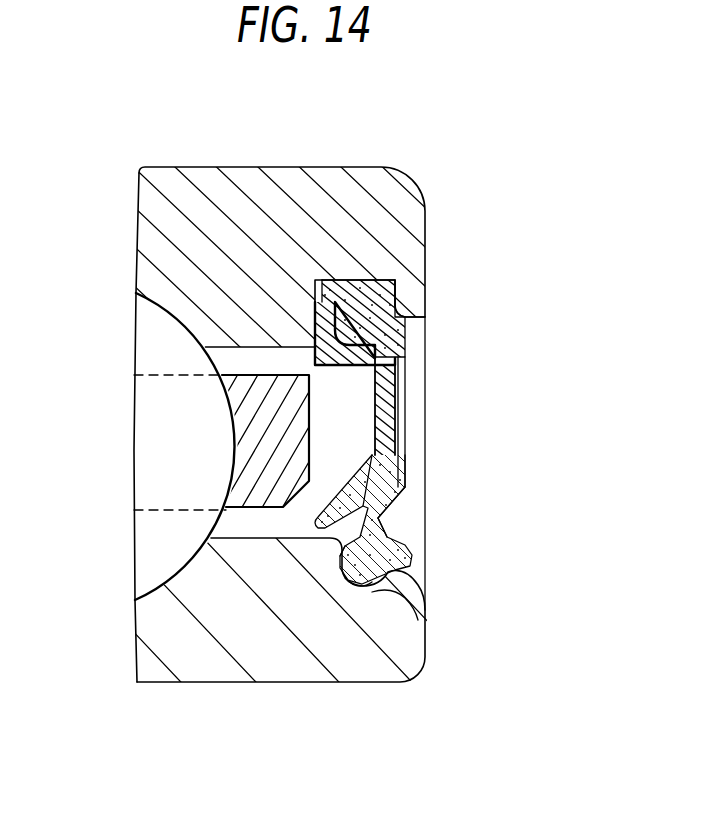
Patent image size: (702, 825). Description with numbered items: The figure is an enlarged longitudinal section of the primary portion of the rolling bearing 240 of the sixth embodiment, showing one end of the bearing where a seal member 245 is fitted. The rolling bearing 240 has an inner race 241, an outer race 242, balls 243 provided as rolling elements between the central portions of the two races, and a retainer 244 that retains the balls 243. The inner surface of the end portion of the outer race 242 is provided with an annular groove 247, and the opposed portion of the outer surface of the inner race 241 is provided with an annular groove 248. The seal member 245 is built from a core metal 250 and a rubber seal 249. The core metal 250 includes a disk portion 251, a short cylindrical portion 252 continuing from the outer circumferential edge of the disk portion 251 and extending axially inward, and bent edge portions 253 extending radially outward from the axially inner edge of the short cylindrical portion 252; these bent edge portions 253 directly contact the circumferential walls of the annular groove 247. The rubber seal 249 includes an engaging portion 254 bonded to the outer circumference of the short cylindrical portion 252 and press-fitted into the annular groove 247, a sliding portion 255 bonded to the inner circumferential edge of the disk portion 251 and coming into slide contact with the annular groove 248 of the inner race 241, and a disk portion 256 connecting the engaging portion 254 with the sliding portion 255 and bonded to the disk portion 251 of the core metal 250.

The rolling bearing 240 is at (443, 194).
The inner race 241 is at (222, 670).
The outer race 242 is at (238, 180).
The balls (rolling elements) 243 is at (150, 452).
The retainer 244 is at (230, 512).
The seal member 245 is at (425, 488).
The annular groove 247 is at (408, 292).
The annular groove 248 is at (412, 600).
The rubber seal 249 is at (424, 348).
The core metal 250 is at (420, 412).
The disk portion 251 is at (405, 460).
The short cylindrical portion 252 is at (410, 327).
The bent edge portion 253 is at (354, 363).
The engaging portion 254 is at (402, 306).
The sliding portion 255 is at (400, 540).
The disk portion 256 is at (407, 380).